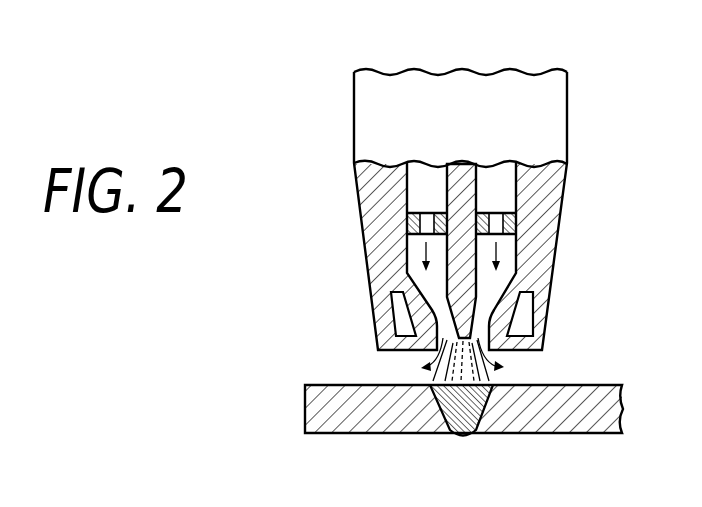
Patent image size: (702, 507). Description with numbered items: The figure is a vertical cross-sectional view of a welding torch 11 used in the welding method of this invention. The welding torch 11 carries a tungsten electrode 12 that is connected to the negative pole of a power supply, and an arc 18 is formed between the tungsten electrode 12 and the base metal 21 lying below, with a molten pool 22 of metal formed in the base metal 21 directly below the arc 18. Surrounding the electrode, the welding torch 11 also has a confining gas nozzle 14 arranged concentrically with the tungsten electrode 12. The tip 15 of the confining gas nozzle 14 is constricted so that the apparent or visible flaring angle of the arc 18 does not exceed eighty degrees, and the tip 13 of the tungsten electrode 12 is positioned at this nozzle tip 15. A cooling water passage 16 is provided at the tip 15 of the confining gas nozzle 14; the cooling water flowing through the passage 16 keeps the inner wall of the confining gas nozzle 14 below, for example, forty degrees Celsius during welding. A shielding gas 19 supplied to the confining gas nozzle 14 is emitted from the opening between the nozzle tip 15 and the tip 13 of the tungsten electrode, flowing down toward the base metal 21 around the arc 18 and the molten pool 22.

The welding torch 11 is at (532, 65).
The tungsten electrode 12 is at (468, 179).
The tip of the tungsten electrode 13 is at (455, 302).
The confining gas nozzle 14 is at (565, 237).
The tip of the confining gas nozzle 15 is at (537, 328).
The cooling water passage 16 is at (533, 300).
The arc 18 is at (488, 383).
The shielding gas 19 is at (438, 356).
The base metal 21 is at (550, 423).
The molten pool 22 is at (463, 438).